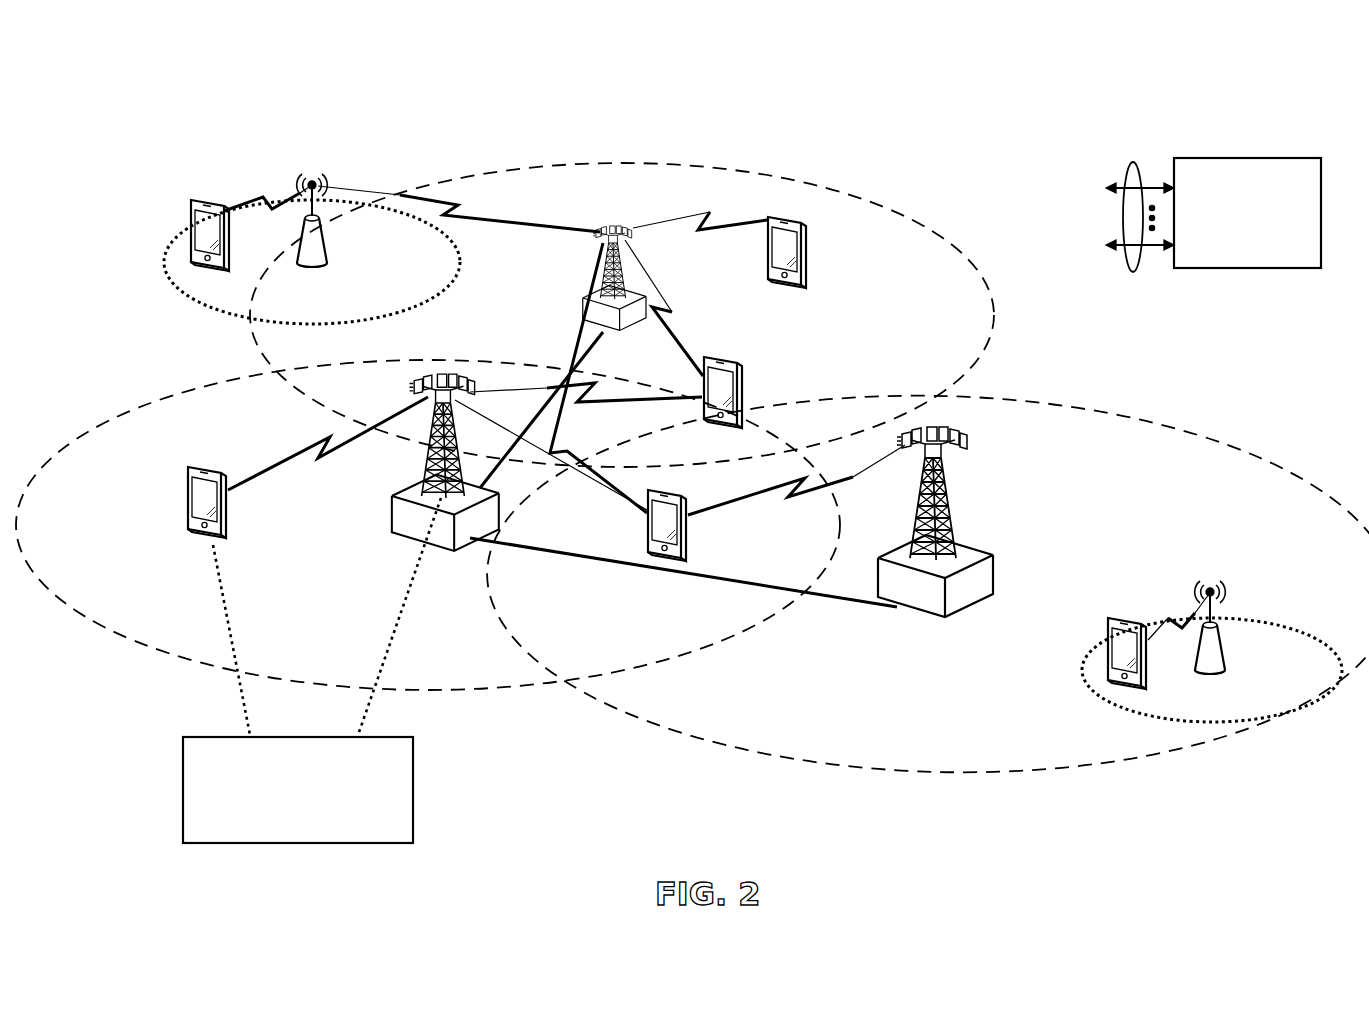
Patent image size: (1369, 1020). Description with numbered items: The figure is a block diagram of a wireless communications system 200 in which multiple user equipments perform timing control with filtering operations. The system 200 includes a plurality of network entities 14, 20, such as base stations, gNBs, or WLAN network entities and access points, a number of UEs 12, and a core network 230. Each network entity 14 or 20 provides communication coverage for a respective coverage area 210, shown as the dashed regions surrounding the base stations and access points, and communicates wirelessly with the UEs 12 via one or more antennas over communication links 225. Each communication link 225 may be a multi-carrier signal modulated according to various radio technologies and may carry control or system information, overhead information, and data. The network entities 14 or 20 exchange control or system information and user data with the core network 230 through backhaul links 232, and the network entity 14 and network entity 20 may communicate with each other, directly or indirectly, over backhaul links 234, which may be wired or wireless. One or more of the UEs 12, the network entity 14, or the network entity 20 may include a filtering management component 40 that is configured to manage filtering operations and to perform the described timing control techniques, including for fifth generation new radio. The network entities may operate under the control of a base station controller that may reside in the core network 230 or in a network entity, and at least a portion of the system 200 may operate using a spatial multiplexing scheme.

The wireless communications system 200 is at (188, 106).
The UE 12 is at (191, 212).
The network entity 14 is at (582, 306).
The network entity 20 is at (328, 263).
The filtering management component 40 is at (313, 843).
The coverage area 210 is at (169, 268).
The communication link 225 is at (262, 196).
The core network 230 is at (1236, 157).
The backhaul links 232 is at (1133, 164).
The backhaul links 234 is at (576, 362).